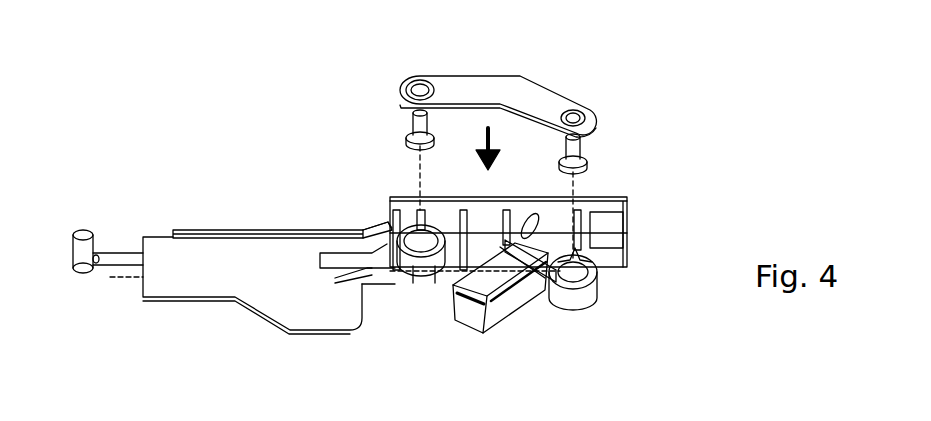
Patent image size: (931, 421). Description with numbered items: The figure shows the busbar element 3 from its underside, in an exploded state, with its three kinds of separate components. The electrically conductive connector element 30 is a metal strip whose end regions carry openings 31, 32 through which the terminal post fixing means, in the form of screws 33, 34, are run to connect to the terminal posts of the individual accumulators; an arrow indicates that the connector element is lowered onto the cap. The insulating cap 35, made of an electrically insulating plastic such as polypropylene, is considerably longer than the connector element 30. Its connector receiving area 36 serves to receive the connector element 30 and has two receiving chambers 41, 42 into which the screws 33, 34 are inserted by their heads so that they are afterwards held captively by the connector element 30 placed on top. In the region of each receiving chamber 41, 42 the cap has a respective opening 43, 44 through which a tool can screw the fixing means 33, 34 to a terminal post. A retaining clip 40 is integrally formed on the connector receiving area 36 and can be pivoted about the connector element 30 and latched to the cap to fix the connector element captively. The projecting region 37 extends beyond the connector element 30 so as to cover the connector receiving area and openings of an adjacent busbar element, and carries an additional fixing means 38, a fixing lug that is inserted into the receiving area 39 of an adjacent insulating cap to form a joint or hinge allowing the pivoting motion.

The busbar element 3 is at (223, 84).
The connector element 30 is at (530, 85).
The opening 31 is at (420, 82).
The opening 32 is at (592, 113).
The screw 33 is at (406, 137).
The screw 34 is at (590, 166).
The insulating cap 35 is at (642, 244).
The connector receiving area 36 is at (430, 292).
The projecting region 37 is at (254, 312).
The additional fixing means 38 is at (82, 274).
The receiving area 39 is at (373, 257).
The retaining clip 40 is at (490, 322).
The receiving chamber 41 is at (410, 285).
The receiving chamber 42 is at (596, 285).
The opening 43 is at (424, 250).
The opening 44 is at (582, 290).